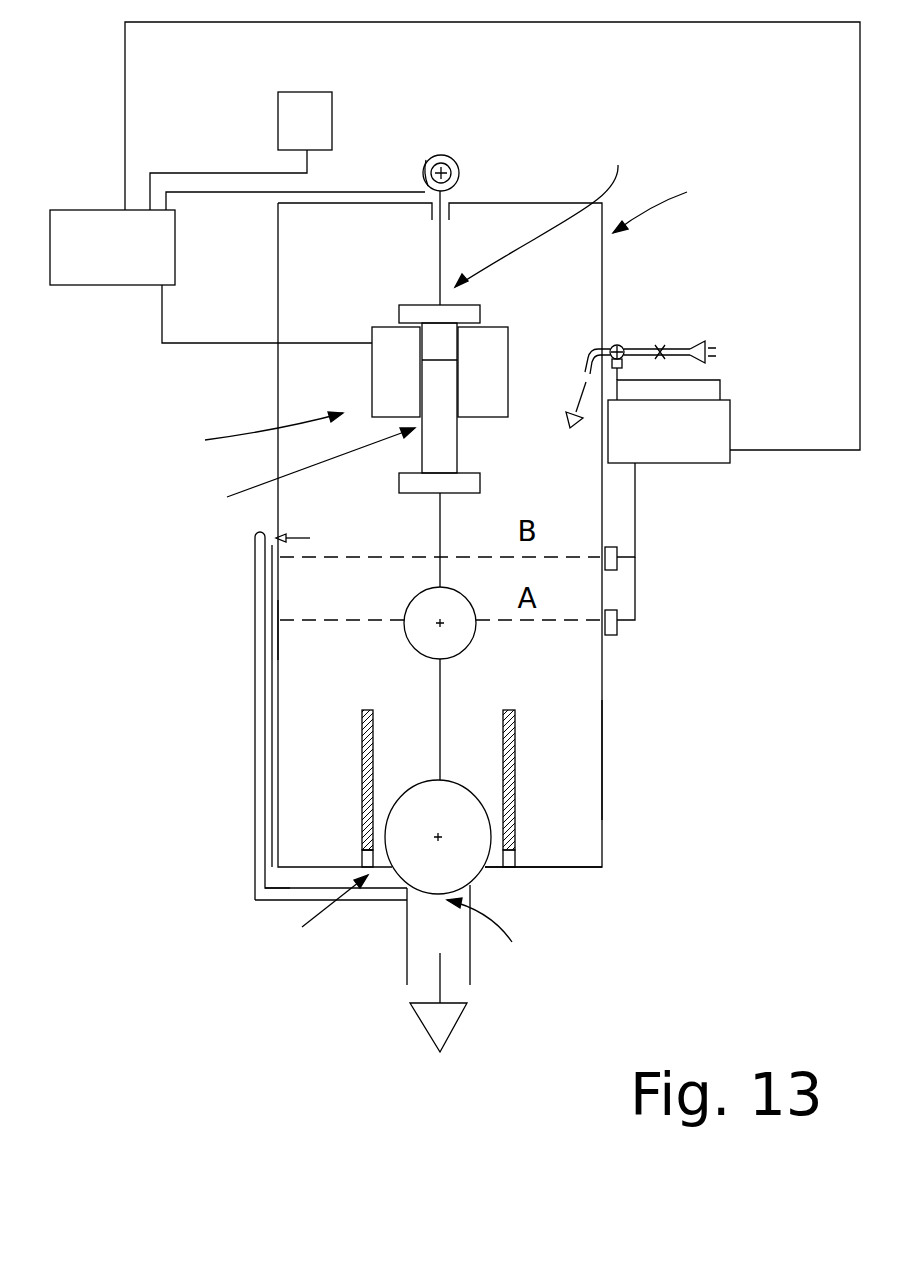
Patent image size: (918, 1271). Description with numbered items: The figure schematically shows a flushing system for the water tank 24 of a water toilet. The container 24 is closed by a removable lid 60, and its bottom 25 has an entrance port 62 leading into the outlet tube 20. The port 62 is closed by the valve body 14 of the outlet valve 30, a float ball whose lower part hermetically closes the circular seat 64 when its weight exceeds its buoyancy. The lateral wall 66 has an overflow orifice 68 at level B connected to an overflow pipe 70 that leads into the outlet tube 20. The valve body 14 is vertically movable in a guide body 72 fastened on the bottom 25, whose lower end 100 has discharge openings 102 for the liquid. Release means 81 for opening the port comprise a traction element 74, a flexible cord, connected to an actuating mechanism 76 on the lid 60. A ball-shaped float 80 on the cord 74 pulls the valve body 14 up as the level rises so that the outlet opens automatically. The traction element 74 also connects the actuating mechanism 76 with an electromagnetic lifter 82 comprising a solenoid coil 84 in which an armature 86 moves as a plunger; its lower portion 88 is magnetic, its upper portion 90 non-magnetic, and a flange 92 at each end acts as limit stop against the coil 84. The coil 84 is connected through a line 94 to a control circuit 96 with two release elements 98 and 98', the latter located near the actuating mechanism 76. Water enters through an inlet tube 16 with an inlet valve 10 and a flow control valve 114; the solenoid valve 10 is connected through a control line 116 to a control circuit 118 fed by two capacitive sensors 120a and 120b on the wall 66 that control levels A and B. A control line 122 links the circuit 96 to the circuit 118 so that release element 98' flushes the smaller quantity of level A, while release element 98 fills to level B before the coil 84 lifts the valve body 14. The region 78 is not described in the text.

The control line 122 is at (124, 58).
The control circuit 96 is at (100, 232).
The release element 98 is at (268, 108).
The removable lid 60 is at (375, 203).
The lateral wall 66 is at (602, 757).
The bottom 25 is at (562, 872).
The circular seat 64 is at (478, 877).
The actuating mechanism 76 is at (462, 172).
The release element 98' is at (476, 126).
The release means 81 is at (540, 209).
The water tank 24 is at (676, 194).
The traction element 74 is at (437, 247).
The flange 92 is at (405, 315).
The lower portion 88 is at (442, 443).
The solenoid coil 84 is at (372, 380).
The upper portion 90 is at (443, 347).
The line 94 is at (162, 322).
The electromagnetic lifter 82 is at (250, 432).
The armature 86 is at (286, 469).
The inlet valve 10 is at (622, 345).
The flow control valve 114 is at (663, 348).
The inlet tube 16 is at (708, 345).
The control line 116 is at (713, 373).
The control circuit 118 is at (710, 430).
The capacitive sensor 120b is at (617, 555).
The capacitive sensor 120a is at (617, 617).
The float 80 is at (467, 628).
The valve body 14 is at (478, 838).
The guide body 72 is at (513, 810).
The discharge openings 102 is at (363, 857).
The overflow pipe 70 is at (262, 790).
The channel 78 is at (300, 635).
The lower end 100 is at (262, 880).
The overflow orifice 68 is at (265, 534).
The outlet tube 20 is at (405, 947).
The outlet valve 30 is at (314, 925).
The entrance port 62 is at (496, 936).